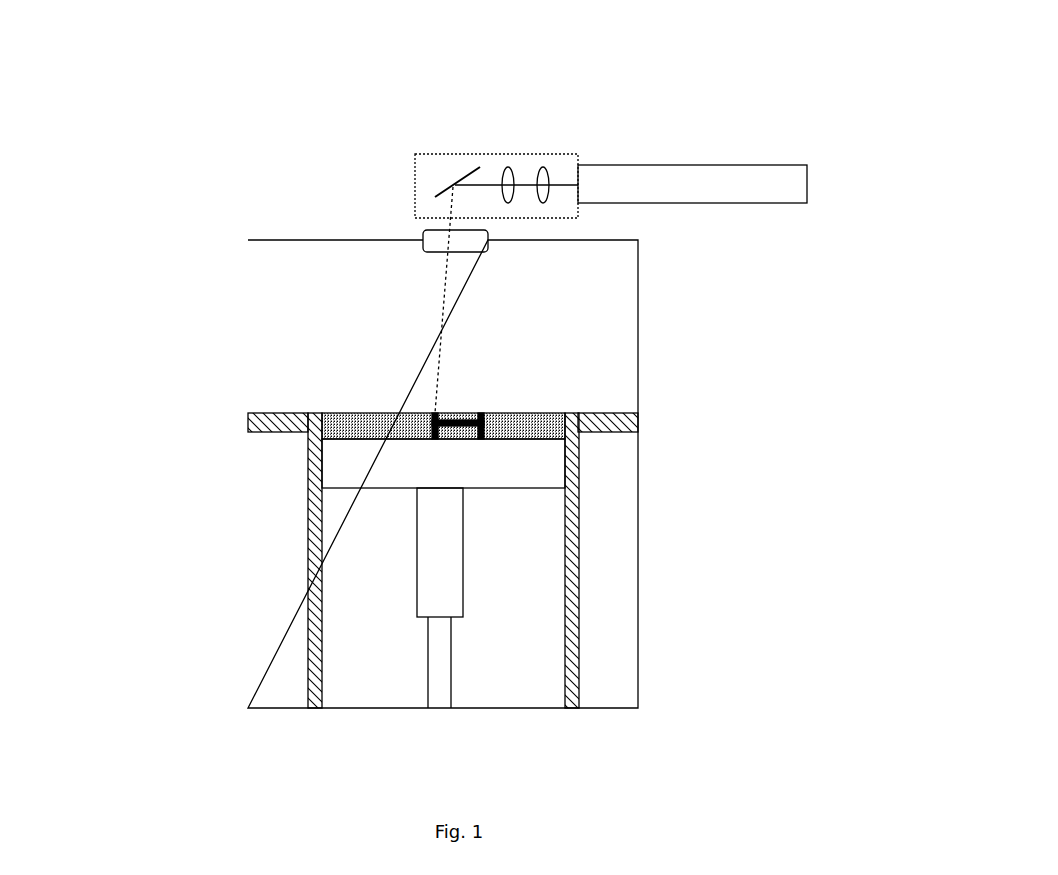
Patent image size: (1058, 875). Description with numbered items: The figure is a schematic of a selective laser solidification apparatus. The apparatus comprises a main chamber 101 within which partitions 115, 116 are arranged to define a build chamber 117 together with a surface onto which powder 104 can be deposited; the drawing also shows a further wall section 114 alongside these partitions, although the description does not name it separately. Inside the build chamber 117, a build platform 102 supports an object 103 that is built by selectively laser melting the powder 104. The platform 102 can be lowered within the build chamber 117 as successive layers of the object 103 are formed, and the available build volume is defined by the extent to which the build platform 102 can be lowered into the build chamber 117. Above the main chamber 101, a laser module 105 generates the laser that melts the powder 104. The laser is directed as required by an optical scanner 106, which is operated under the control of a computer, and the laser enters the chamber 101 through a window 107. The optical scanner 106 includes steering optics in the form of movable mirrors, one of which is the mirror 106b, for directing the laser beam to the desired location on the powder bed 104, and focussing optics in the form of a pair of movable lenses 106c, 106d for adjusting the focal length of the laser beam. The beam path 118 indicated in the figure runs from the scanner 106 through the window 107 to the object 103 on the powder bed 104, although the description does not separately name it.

The main chamber 101 is at (246, 317).
The build platform 102 is at (508, 465).
The object 103 is at (435, 446).
The powder 104 is at (541, 420).
The laser module 105 is at (699, 164).
The optical scanner 106 is at (574, 154).
The movable mirror 106b is at (442, 177).
The movable lens 106c is at (508, 154).
The movable lens 106d is at (549, 154).
The window 107 is at (432, 232).
The right wall 114 is at (568, 590).
The partition 115 is at (640, 423).
The partition 116 is at (321, 580).
The build chamber 117 is at (325, 433).
The light beam 118 is at (432, 339).